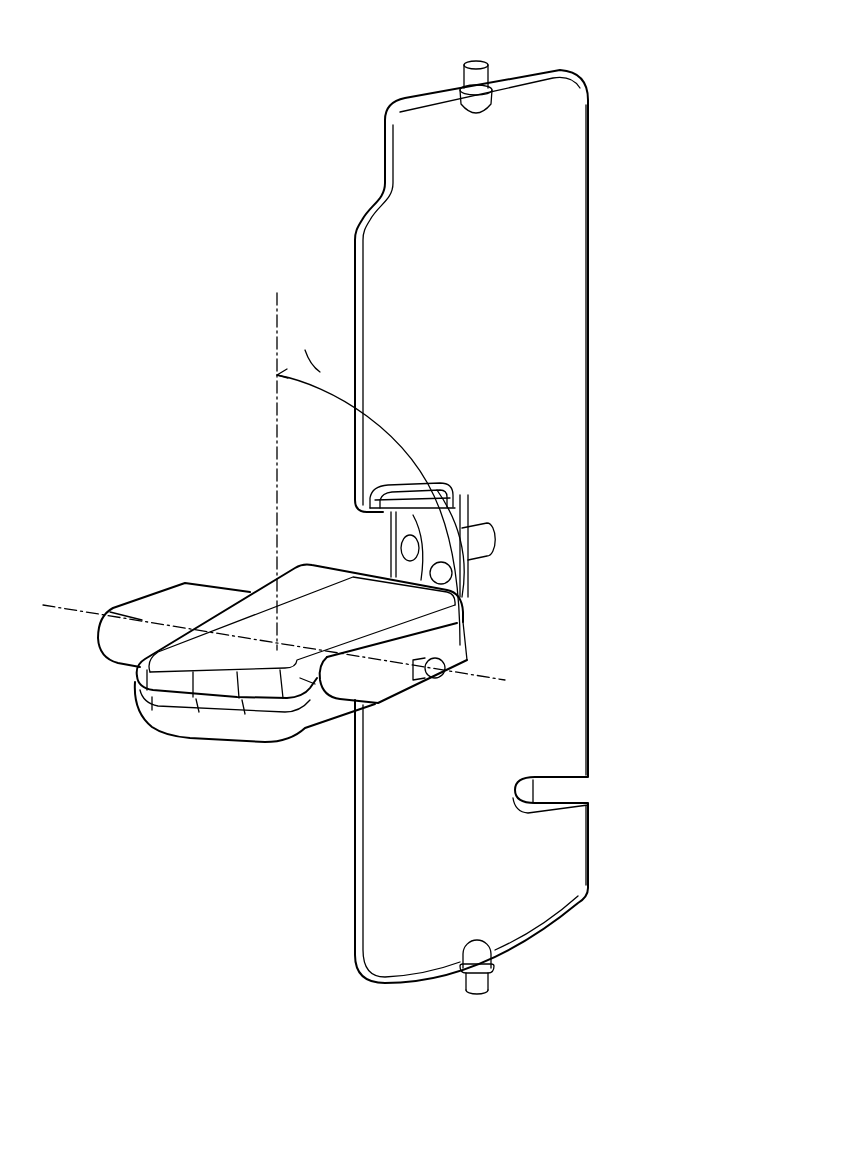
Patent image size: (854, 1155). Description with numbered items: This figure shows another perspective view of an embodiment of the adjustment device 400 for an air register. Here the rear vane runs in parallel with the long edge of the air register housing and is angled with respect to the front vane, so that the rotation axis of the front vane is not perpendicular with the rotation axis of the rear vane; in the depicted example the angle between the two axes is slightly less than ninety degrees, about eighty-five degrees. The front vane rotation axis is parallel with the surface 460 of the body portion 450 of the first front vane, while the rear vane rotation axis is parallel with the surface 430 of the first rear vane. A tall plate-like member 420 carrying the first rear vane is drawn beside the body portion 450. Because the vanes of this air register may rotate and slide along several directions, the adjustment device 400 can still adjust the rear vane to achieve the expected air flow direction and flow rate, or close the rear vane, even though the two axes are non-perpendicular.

The adjustment device 400 is at (698, 66).
The mounting plate 420 is at (593, 297).
The surface of the first rear vane 430 is at (548, 488).
The body portion 450 is at (105, 666).
The surface of the body portion 460 is at (176, 605).